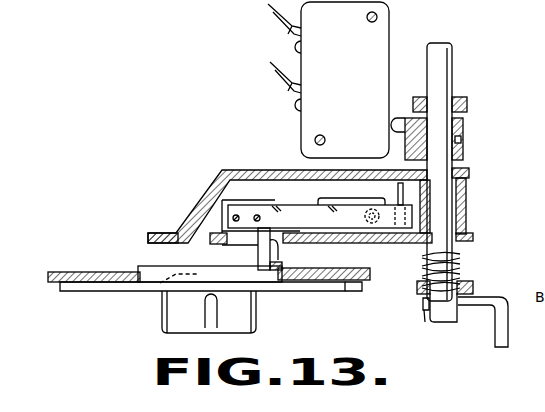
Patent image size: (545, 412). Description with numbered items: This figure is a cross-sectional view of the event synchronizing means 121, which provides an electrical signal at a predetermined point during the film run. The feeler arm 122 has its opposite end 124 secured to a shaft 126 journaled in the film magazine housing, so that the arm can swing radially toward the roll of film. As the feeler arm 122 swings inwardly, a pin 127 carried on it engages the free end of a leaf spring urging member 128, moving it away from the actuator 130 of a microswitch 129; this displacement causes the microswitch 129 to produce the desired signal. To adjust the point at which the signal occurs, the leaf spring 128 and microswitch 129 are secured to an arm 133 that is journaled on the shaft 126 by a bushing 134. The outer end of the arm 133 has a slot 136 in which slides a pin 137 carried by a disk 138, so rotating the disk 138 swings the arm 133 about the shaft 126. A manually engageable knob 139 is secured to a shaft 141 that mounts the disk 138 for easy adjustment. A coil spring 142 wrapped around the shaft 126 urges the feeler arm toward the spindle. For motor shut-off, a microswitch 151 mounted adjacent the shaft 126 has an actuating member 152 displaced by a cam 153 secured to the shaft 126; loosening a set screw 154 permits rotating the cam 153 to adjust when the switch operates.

The event synchronizing means 121 is at (212, 166).
The feeler arm 122 is at (153, 232).
The opposite end of the arm 124 is at (469, 172).
The shaft 126 is at (443, 68).
The pin 127 is at (403, 192).
The leaf spring urging member 128 is at (320, 228).
The microswitch 129 is at (323, 203).
The actuator 130 is at (372, 208).
The arm 133 is at (351, 243).
The bushing 134 is at (467, 222).
The slot 136 is at (240, 245).
The pin 137 is at (280, 252).
The disk 138 is at (144, 266).
The manually engageable knob 139 is at (169, 319).
The shaft 141 is at (161, 283).
The coil spring 142 is at (456, 262).
The microswitch 151 is at (381, 34).
The actuating member 152 is at (398, 124).
The cam 153 is at (424, 134).
The set screw 154 is at (462, 140).